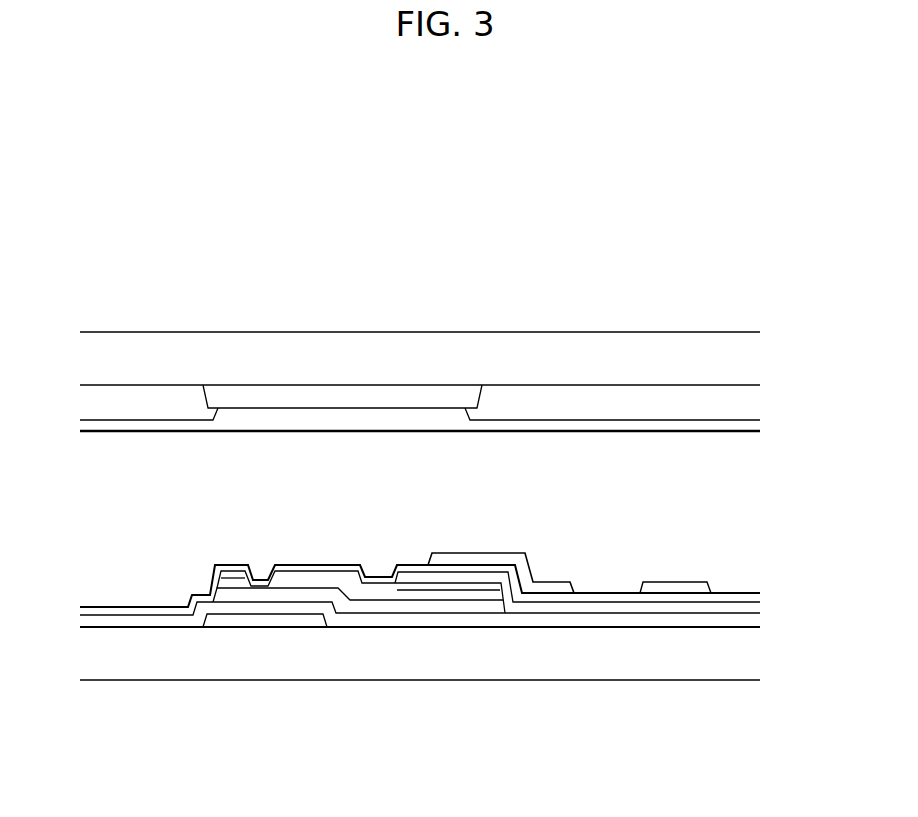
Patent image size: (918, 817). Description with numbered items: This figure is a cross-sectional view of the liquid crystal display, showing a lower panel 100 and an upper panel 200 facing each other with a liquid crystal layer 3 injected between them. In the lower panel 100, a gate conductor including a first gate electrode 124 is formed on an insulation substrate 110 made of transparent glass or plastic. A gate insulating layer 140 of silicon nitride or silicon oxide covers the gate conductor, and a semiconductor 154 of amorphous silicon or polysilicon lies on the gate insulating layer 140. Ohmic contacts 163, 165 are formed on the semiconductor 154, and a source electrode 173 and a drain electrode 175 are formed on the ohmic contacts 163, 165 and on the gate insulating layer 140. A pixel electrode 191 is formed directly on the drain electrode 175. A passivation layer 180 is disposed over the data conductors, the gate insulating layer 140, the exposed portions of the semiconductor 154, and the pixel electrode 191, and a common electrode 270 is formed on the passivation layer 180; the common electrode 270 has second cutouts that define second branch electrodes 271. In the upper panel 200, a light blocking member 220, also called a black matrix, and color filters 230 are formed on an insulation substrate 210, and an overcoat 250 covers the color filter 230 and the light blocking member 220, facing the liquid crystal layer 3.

The liquid crystal layer 3 is at (762, 434).
The lower panel 100 is at (762, 598).
The insulation substrate 110 is at (725, 660).
The first gate electrode 124 is at (296, 621).
The gate insulating layer 140 is at (345, 616).
The semiconductor 154 is at (403, 606).
The ohmic contact 163 is at (225, 588).
The ohmic contact 165 is at (442, 598).
The source electrode 173 is at (236, 580).
The drain electrode 175 is at (484, 588).
The passivation layer 180 is at (606, 597).
The pixel electrode 191 is at (552, 607).
The upper panel 200 is at (762, 332).
The insulation substrate 210 is at (657, 352).
The light blocking member 220 is at (299, 397).
The color filter 230 is at (155, 402).
The overcoat 250 is at (398, 420).
The common electrode 270 is at (535, 588).
The second branch electrode 271 is at (672, 588).